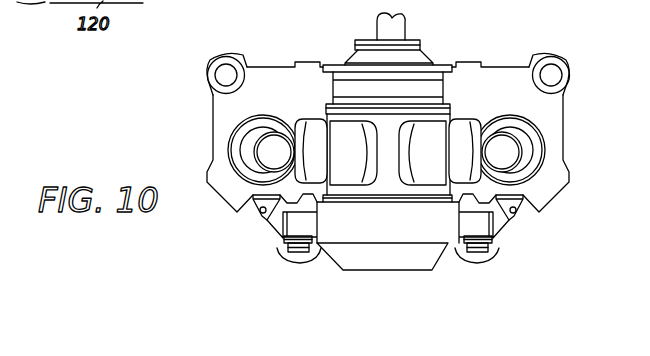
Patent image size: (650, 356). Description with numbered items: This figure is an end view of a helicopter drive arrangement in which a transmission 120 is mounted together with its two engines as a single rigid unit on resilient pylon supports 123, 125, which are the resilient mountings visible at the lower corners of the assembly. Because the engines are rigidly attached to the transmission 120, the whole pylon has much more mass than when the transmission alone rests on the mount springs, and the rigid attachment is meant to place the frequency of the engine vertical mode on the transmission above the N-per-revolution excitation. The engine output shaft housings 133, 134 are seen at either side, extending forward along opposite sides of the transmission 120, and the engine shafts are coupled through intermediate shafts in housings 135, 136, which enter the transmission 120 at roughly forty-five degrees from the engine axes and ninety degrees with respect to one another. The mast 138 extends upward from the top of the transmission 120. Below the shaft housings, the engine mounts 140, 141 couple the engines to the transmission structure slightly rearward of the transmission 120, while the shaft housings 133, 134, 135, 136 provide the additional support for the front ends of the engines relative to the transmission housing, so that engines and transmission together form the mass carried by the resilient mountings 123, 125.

The transmission 120 is at (373, 180).
The resilient pylon support 123 is at (279, 253).
The resilient pylon support 125 is at (497, 253).
The engine output shaft housing 133 is at (240, 140).
The engine output shaft housing 134 is at (533, 140).
The intermediate shaft housing 135 is at (343, 147).
The intermediate shaft housing 136 is at (430, 140).
The mast 138 is at (392, 28).
The engine mount 140 is at (260, 212).
The engine mount 141 is at (514, 212).